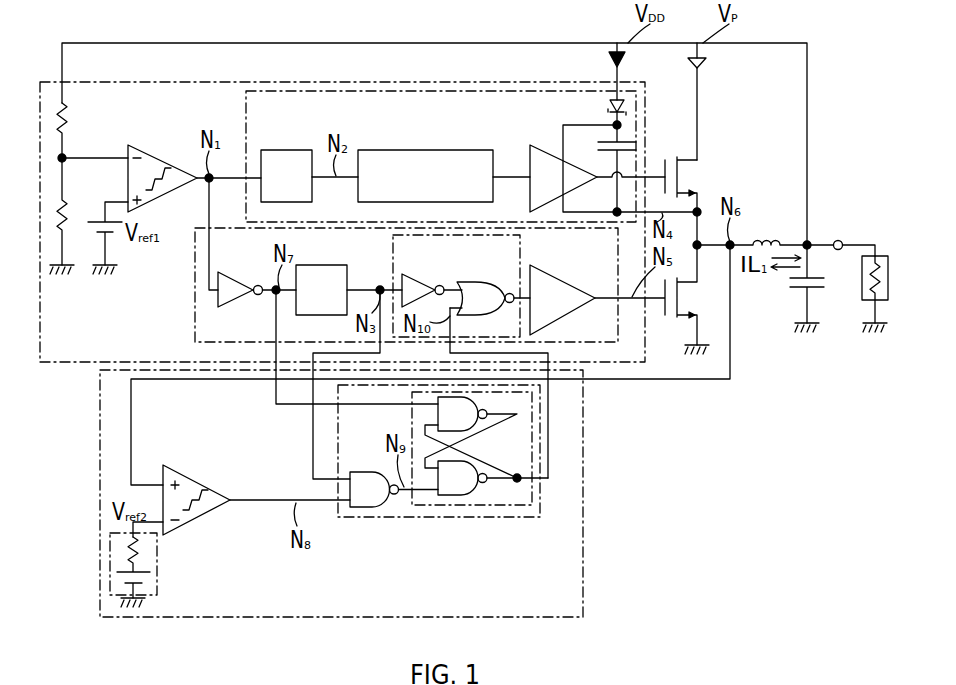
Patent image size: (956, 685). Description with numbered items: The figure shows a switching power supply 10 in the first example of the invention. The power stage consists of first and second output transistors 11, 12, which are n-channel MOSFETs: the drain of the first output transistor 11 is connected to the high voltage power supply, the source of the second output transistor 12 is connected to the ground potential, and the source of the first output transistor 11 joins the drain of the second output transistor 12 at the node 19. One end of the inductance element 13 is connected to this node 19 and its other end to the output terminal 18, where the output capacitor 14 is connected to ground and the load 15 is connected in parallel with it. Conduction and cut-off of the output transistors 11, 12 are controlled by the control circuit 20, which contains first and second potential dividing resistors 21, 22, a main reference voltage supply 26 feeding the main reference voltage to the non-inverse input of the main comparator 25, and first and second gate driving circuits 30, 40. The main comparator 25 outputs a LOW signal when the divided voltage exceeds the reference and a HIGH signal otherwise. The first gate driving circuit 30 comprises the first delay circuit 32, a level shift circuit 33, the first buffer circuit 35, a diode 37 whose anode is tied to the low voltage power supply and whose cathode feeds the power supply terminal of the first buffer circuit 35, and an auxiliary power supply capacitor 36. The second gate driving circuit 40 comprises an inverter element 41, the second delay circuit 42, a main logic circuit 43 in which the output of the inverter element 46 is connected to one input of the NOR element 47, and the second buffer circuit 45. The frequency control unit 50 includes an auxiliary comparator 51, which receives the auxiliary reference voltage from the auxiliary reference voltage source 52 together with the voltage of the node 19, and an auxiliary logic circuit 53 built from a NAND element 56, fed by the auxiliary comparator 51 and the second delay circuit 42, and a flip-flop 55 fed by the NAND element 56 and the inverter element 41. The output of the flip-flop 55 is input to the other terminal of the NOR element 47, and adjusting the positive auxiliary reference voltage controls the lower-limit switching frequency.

The switching power supply 10 is at (90, 33).
The control circuit 20 is at (437, 82).
The first gate driving circuit 30 is at (246, 108).
The second gate driving circuit 40 is at (195, 300).
The main logic circuit 43 is at (522, 240).
The frequency control unit 50 is at (583, 497).
The auxiliary logic circuit 53 is at (415, 518).
The flip-flop 55 is at (478, 506).
The first output transistor 11 is at (683, 175).
The second output transistor 12 is at (668, 318).
The inductance element 13 is at (765, 240).
The output capacitor 14 is at (790, 285).
The load 15 is at (862, 292).
The output terminal 18 is at (838, 240).
The node 19 is at (700, 255).
The first potential dividing resistor 21 is at (67, 112).
The second potential dividing resistor 22 is at (68, 205).
The main comparator 25 is at (150, 148).
The main reference voltage supply 26 is at (88, 234).
The first delay circuit 32 is at (287, 150).
The level shift circuit 33 is at (417, 150).
The first buffer circuit 35 is at (530, 145).
The auxiliary power supply capacitor 36 is at (636, 138).
The diode 37 is at (608, 104).
The inverter element 41 is at (250, 284).
The second delay circuit 42 is at (347, 268).
The second buffer circuit 45 is at (591, 279).
The inverter element 46 is at (428, 277).
The NOR element 47 is at (484, 282).
The auxiliary comparator 51 is at (200, 524).
The auxiliary reference voltage source 52 is at (157, 578).
The NAND element 56 is at (360, 508).